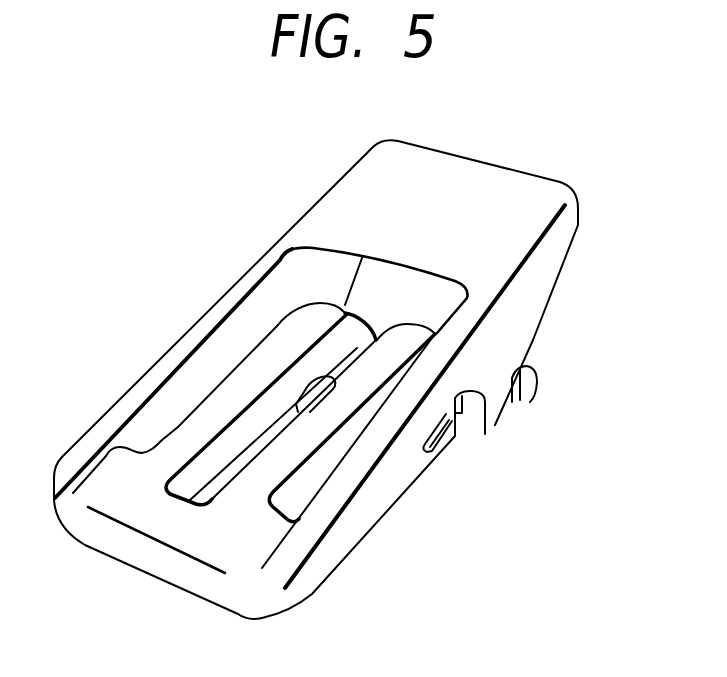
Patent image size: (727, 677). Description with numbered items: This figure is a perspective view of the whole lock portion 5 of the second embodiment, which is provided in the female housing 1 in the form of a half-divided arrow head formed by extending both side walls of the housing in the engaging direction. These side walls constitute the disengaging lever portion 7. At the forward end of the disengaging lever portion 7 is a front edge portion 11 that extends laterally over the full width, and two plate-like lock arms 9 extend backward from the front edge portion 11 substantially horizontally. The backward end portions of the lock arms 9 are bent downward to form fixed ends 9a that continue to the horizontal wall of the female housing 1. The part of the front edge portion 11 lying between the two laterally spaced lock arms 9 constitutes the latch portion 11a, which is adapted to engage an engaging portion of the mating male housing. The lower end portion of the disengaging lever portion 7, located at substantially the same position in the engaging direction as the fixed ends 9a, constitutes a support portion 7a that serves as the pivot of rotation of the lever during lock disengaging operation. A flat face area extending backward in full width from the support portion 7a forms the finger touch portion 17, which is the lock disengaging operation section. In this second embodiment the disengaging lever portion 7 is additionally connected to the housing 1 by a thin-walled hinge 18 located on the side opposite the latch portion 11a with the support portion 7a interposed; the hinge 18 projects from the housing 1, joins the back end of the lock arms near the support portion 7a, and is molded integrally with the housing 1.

The female housing 1 is at (623, 492).
The lock portion 5 is at (190, 213).
The disengaging lever portion 7 is at (520, 321).
The support portion 7a is at (494, 424).
The lock arms 9 is at (275, 463).
The fixed ends 9a is at (438, 456).
The front edge portion 11 is at (207, 548).
The latch portion 11a is at (143, 513).
The finger touch portion 17 is at (525, 182).
The thin-walled hinge 18 is at (533, 381).